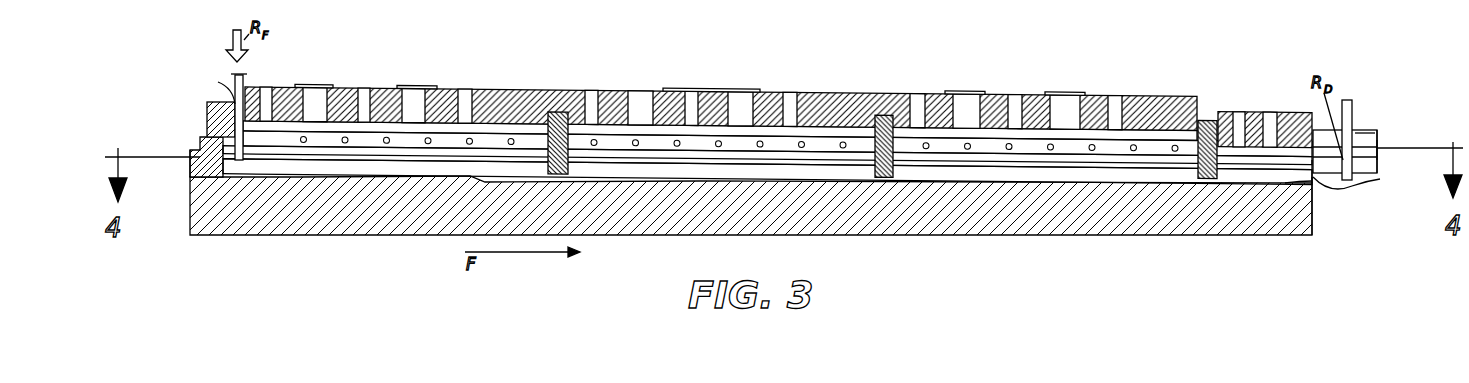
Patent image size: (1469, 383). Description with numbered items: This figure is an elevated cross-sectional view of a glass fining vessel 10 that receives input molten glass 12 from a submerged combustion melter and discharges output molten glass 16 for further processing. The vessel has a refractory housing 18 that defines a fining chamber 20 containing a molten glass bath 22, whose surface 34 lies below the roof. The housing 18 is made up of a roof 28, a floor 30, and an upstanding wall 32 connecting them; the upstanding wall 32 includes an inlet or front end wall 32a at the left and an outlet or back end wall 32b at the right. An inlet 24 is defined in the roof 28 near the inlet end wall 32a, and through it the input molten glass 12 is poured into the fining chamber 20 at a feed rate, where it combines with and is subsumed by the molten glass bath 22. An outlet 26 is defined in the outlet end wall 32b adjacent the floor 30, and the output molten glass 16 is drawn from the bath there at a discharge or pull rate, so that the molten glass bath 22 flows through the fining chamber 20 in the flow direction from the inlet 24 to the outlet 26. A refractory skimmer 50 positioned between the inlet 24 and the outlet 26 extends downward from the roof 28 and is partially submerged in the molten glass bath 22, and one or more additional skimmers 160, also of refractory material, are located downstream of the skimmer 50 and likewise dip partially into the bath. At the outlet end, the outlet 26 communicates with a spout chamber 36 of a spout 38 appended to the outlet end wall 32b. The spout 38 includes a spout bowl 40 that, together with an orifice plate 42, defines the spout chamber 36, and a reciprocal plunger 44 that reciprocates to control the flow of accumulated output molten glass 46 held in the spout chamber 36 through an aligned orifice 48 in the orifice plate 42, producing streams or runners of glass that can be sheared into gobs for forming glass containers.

The glass fining vessel 10 is at (337, 62).
The input molten glass 12 is at (245, 78).
The output molten glass 16 is at (1312, 168).
The housing 18 is at (202, 136).
The fining chamber 20 is at (352, 132).
The molten glass bath 22 is at (692, 168).
The inlet 24 is at (211, 87).
The outlet 26 is at (1312, 170).
The roof 28 is at (510, 92).
The floor 30 is at (305, 222).
The upstanding wall 32 is at (196, 152).
The inlet end wall 32a is at (192, 162).
The outlet end wall 32b is at (1314, 190).
The surface of the molten glass bath 34 is at (372, 158).
The spout chamber 36 is at (1371, 174).
The spout 38 is at (1389, 128).
The spout bowl 40 is at (1378, 152).
The orifice plate 42 is at (1347, 190).
The reciprocal plunger 44 is at (1352, 108).
The accumulated output molten glass 46 is at (1369, 158).
The orifice 48 is at (1346, 195).
The skimmer 50 is at (558, 108).
The additional skimmer 160 is at (884, 108).